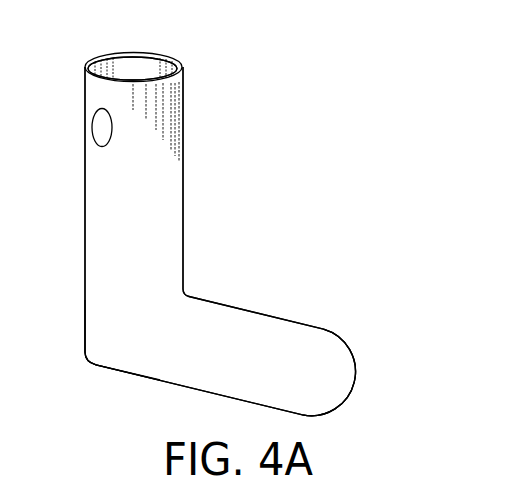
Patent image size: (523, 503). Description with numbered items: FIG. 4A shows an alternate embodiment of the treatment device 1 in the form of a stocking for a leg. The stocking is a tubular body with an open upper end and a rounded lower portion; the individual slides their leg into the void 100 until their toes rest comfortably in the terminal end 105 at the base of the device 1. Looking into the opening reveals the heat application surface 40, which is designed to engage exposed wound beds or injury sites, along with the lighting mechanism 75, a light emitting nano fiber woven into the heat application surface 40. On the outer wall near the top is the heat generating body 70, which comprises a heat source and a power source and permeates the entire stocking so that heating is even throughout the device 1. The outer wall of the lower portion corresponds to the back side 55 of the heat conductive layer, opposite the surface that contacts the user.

The treatment device 1 is at (320, 170).
The void 100 is at (84, 54).
The lighting mechanism 75 is at (152, 70).
The heat application surface 40 is at (132, 68).
The heat generating body 70 is at (103, 128).
The back side 55 is at (105, 305).
The terminal end 105 is at (363, 388).